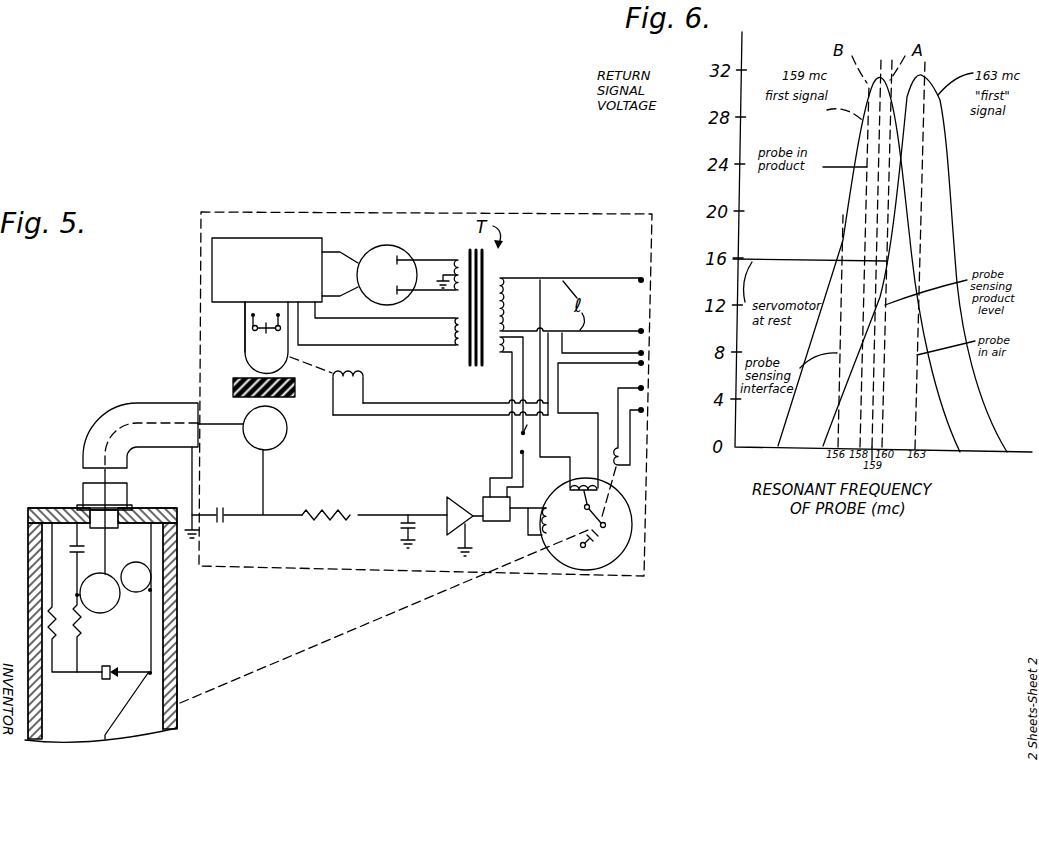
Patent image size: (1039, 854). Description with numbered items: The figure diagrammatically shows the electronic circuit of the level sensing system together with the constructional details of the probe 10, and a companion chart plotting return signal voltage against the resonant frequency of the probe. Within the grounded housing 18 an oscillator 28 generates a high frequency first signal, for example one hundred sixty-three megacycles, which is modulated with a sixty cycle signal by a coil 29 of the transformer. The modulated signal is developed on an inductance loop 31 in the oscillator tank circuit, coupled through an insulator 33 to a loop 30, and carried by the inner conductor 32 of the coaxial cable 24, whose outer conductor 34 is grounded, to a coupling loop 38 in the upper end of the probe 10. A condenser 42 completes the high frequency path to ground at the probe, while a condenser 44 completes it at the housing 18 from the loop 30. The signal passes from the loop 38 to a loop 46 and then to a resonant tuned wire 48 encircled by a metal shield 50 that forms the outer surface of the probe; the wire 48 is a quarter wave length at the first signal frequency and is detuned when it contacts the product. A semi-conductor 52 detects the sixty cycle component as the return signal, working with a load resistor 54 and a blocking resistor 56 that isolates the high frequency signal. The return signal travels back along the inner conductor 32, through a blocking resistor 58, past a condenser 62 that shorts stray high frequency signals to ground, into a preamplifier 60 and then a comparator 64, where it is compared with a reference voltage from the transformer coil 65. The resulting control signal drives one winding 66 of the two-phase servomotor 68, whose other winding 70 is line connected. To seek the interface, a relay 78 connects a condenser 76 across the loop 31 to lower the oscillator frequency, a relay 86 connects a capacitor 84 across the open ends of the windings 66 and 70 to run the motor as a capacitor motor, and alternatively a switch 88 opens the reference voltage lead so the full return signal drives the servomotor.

The probe 10 is at (197, 635).
The housing 18 is at (293, 212).
The coaxial cable 24 is at (88, 412).
The oscillator 28 is at (335, 245).
The coil 29 is at (450, 347).
The loop 30 is at (287, 432).
The inductance loop 31 is at (245, 353).
The inner conductor 32 is at (137, 423).
The insulator 33 is at (233, 388).
The outer conductor 34 is at (132, 448).
The coupling loop 38 is at (108, 612).
The condenser 42 is at (80, 556).
The condenser 44 is at (221, 523).
The loop 46 is at (140, 563).
The resonant tuned wire 48 is at (105, 741).
The metal shield 50 is at (177, 681).
The semi-conductor 52 is at (105, 680).
The load resistor 54 is at (55, 640).
The blocking resistor 56 is at (80, 633).
The blocking resistor 58 is at (318, 520).
The preamplifier 60 is at (449, 497).
The condenser 62 is at (404, 541).
The comparator 64 is at (497, 522).
The transformer coil 65 is at (497, 353).
The winding 66 is at (543, 535).
The servomotor 68 is at (629, 506).
The winding 70 is at (580, 487).
The condenser 76 is at (266, 338).
The relay 78 is at (352, 372).
The capacitor 84 is at (606, 528).
The relay 86 is at (622, 457).
The switch 88 is at (527, 440).